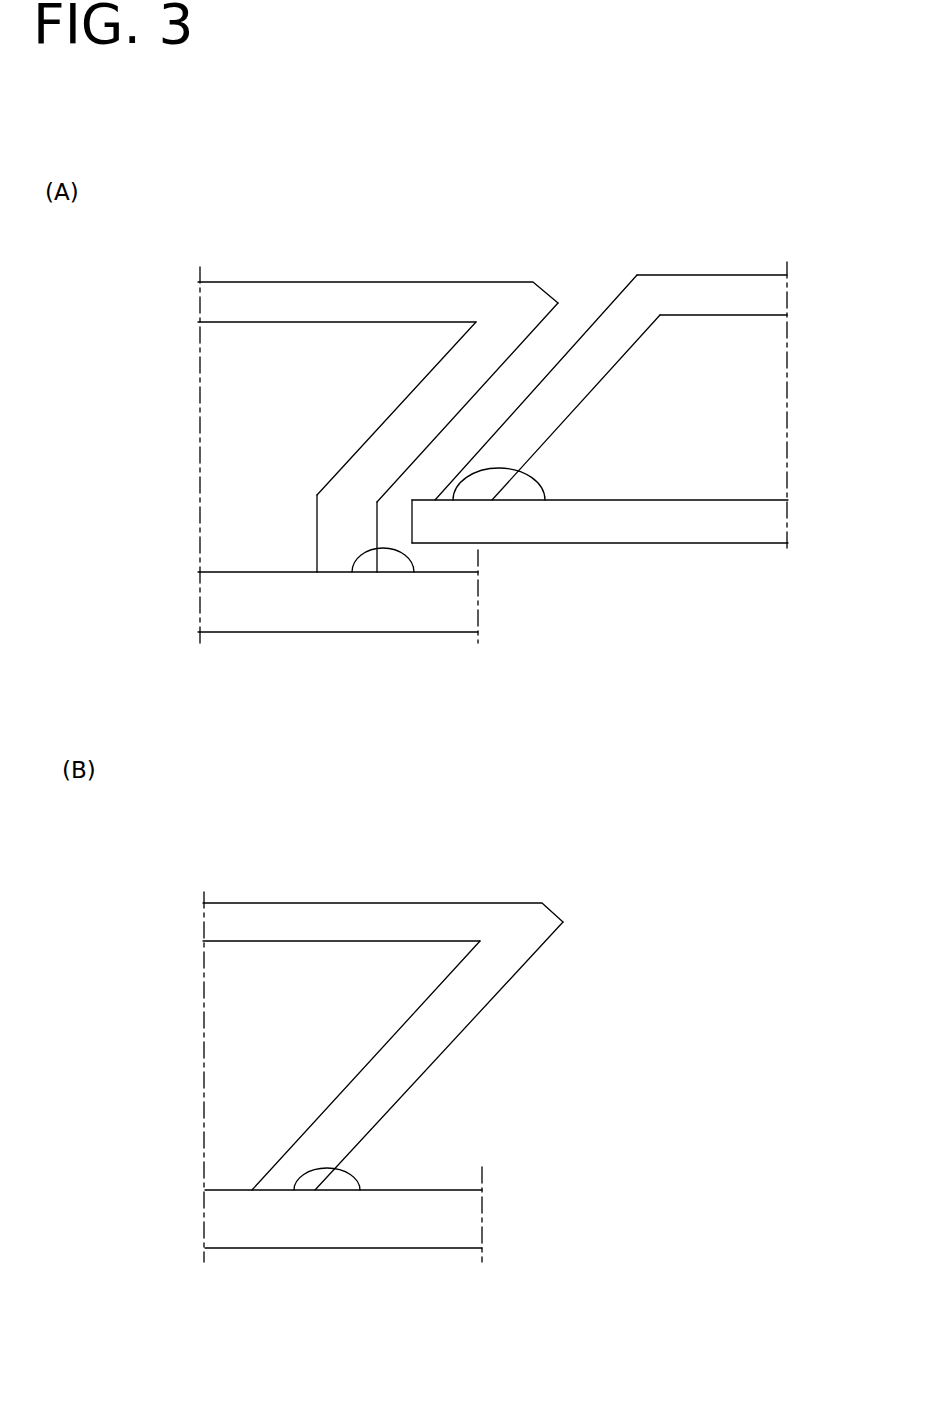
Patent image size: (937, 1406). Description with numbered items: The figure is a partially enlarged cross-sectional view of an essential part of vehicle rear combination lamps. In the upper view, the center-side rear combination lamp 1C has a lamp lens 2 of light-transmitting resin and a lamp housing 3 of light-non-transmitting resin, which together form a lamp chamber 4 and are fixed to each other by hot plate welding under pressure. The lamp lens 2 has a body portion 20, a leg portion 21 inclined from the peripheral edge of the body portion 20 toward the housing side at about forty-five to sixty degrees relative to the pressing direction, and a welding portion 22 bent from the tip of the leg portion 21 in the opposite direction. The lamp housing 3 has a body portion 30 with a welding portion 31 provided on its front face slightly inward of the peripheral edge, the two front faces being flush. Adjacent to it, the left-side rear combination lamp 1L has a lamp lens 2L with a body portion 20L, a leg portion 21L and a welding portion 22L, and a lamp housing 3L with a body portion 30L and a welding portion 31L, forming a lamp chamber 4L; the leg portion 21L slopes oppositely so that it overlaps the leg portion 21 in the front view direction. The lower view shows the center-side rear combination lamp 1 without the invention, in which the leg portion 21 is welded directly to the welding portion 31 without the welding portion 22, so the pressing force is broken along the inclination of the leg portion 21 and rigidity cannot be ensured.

The center-side rear combination lamp 1 is at (252, 885).
The center-side rear combination lamp 1C is at (245, 230).
The left-side rear combination lamp 1L is at (682, 235).
The lamp lens 2 is at (331, 687).
The lamp lens 2L is at (629, 411).
The body portion 20 is at (355, 282).
The body portion 20L is at (745, 275).
The leg portion 21 is at (434, 368).
The leg portion 21L is at (600, 317).
The welding portion 22 is at (317, 523).
The welding portion 22L is at (472, 502).
The lamp housing 3 is at (340, 950).
The lamp housing 3L is at (600, 577).
The body portion 30 is at (295, 632).
The body portion 30L is at (660, 545).
The welding portion 31 is at (415, 570).
The welding portion 31L is at (543, 498).
The lamp chamber 4 is at (277, 425).
The lamp chamber 4L is at (697, 399).